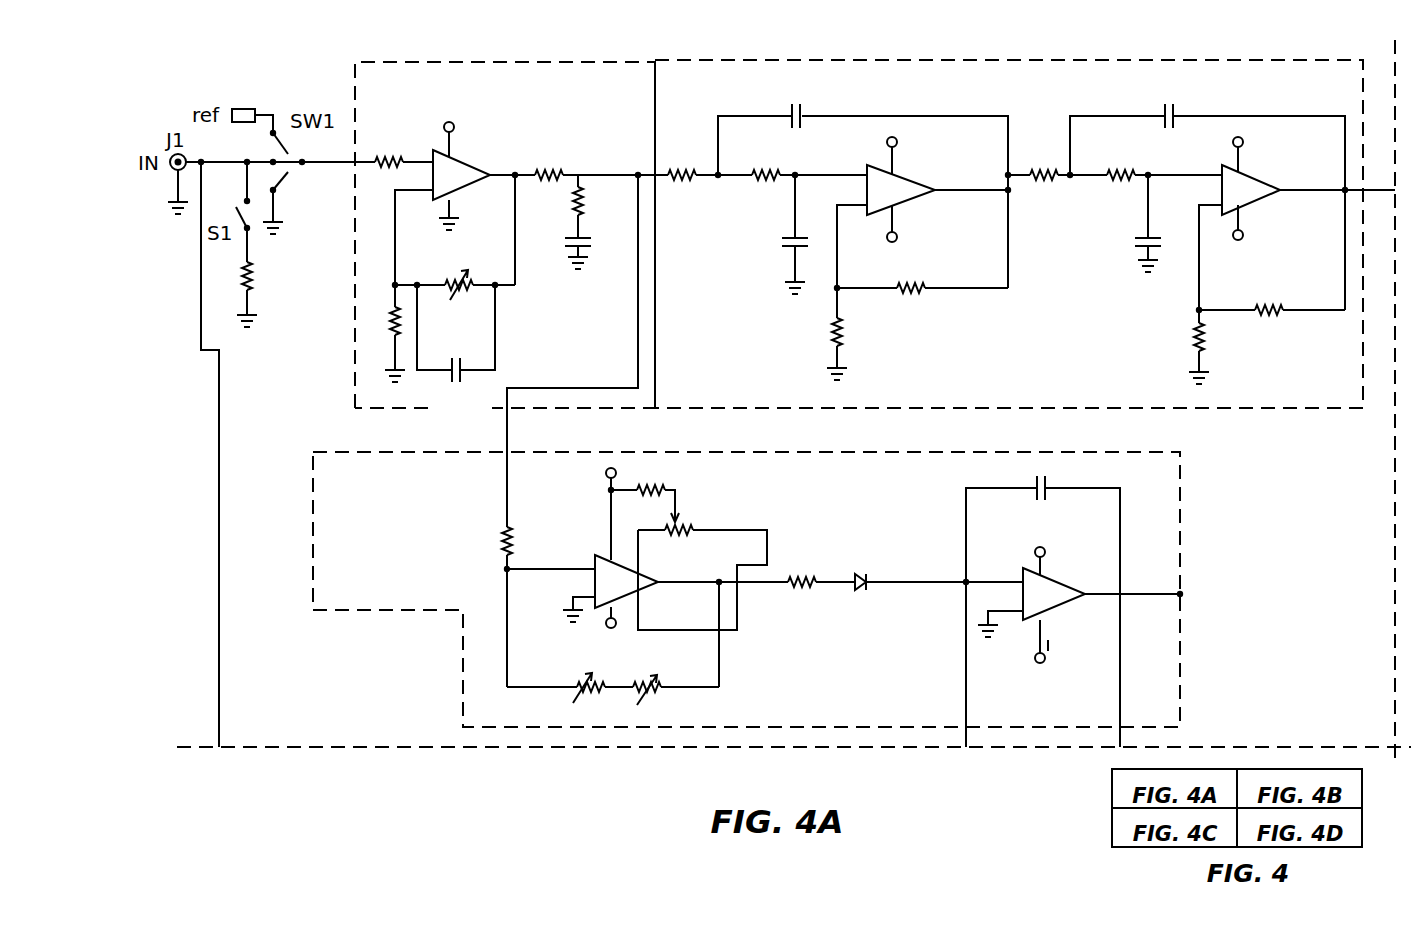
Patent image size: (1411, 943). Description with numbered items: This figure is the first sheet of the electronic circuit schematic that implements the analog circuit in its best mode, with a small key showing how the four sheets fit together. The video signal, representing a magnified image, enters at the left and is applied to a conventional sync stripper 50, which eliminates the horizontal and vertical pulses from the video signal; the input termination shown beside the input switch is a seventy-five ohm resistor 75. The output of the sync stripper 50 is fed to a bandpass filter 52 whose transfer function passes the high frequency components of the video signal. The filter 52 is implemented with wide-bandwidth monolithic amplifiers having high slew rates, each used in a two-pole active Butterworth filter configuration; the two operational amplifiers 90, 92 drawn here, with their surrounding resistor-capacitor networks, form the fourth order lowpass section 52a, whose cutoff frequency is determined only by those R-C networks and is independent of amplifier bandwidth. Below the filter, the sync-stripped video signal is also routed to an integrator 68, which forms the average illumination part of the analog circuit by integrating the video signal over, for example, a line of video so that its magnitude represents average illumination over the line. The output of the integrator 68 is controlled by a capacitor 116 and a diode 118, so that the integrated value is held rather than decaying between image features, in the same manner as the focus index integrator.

The sync stripper 50 is at (511, 294).
The bandpass filter 52 is at (1025, 218).
The lowpass section 52a is at (861, 222).
The integrator 68 is at (748, 599).
The termination resistor R12 75 is at (269, 277).
The operational amplifier 90 is at (908, 180).
The operational amplifier 92 is at (1263, 181).
The capacitor 116 is at (1046, 481).
The diode 118 is at (862, 574).